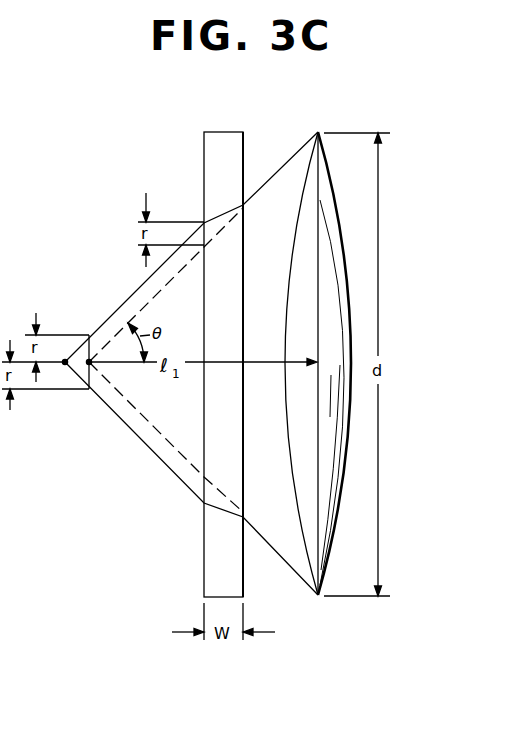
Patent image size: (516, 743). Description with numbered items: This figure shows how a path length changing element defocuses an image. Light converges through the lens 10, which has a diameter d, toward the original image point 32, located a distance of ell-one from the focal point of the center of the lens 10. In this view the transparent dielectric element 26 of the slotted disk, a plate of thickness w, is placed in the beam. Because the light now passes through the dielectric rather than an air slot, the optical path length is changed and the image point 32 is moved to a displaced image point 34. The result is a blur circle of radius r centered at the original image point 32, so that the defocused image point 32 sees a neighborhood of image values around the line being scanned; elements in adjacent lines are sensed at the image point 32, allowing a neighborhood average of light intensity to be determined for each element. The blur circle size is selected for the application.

The lens 10 is at (324, 170).
The transparent dielectric element 26 is at (223, 138).
The image point 32 is at (88, 336).
The displaced image point 34 is at (65, 365).